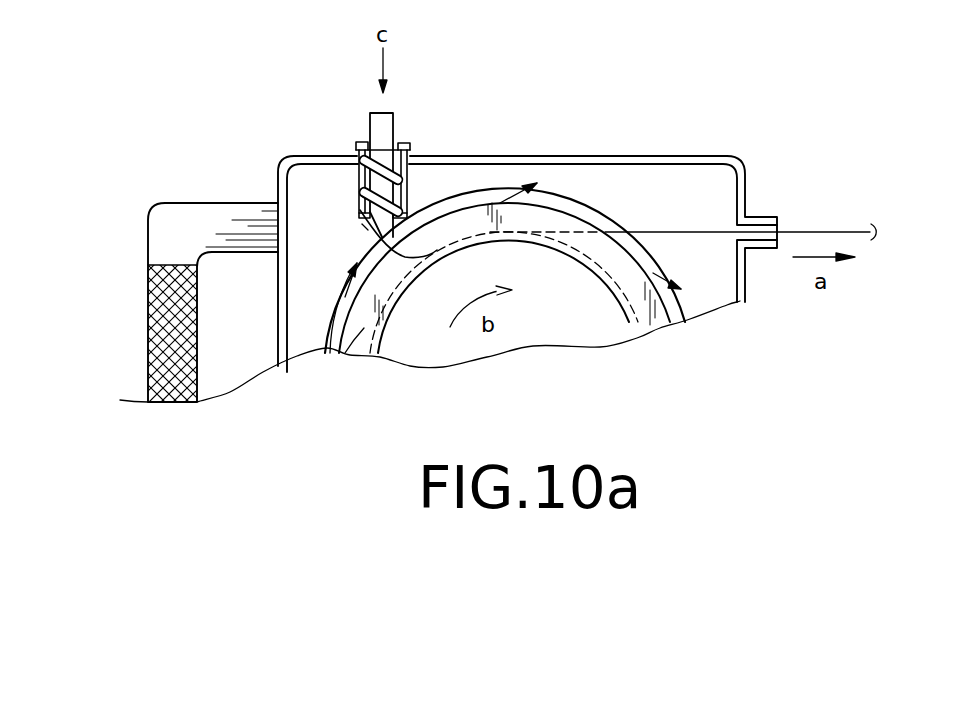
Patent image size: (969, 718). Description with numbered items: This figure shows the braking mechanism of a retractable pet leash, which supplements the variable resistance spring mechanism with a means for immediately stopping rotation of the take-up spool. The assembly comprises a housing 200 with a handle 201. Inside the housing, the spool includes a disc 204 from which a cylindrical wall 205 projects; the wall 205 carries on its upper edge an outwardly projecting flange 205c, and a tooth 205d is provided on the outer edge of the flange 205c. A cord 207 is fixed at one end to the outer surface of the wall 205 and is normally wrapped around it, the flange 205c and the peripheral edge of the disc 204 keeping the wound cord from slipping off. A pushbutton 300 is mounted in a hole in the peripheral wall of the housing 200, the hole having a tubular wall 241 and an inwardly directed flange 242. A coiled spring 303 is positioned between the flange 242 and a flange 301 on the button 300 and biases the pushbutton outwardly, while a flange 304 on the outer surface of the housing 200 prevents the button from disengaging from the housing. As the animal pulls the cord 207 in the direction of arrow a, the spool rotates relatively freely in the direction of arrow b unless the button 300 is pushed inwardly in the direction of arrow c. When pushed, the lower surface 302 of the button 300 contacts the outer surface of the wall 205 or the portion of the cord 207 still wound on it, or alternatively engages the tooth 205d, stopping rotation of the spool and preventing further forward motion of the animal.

The housing 200 is at (563, 158).
The handle 201 is at (148, 380).
The disc 204 is at (593, 210).
The cylindrical wall 205 is at (397, 313).
The flange 205c is at (362, 333).
The tooth 205d is at (358, 262).
The cord 207 is at (827, 228).
The tubular wall 241 is at (360, 196).
The inwardly directed flange 242 is at (363, 227).
The pushbutton 300 is at (396, 128).
The flange 301 is at (410, 148).
The lower surface 302 is at (437, 250).
The coiled spring 303 is at (362, 180).
The flange 304 is at (357, 144).